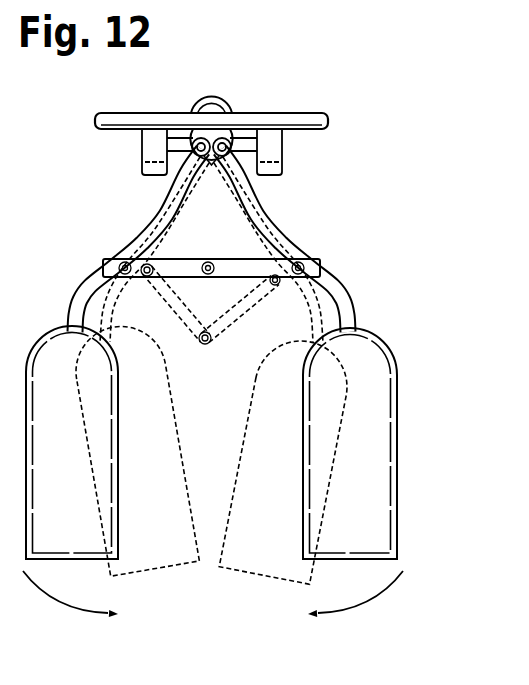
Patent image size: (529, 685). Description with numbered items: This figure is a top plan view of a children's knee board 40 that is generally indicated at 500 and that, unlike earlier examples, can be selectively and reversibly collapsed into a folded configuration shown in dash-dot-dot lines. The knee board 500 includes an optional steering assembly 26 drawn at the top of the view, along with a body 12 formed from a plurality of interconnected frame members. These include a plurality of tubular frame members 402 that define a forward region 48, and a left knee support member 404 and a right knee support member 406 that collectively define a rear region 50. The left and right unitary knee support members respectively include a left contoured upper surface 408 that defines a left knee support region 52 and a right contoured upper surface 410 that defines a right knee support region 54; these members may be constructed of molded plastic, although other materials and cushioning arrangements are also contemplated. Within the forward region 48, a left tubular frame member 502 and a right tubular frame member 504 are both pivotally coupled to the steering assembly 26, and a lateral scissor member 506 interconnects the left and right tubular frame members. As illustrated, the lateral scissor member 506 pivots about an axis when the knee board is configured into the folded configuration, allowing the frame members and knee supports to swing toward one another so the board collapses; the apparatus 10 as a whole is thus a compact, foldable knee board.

The gripping apparatus 10 is at (376, 60).
The body 12 is at (83, 222).
The steering assembly 26 is at (307, 138).
The knee board 40 is at (343, 67).
The forward region 48 is at (330, 239).
The rear region 50 is at (403, 379).
The left knee support region 52 is at (58, 548).
The right knee support region 54 is at (360, 548).
The tubular frame members 402 is at (259, 236).
The left knee support member 404 is at (120, 511).
The right knee support member 406 is at (303, 507).
The left contoured upper surface 408 is at (92, 520).
The right contoured upper surface 410 is at (375, 520).
The knee board 500 is at (325, 60).
The left tubular frame member 502 is at (134, 236).
The right tubular frame member 504 is at (290, 235).
The lateral scissor member 506 is at (222, 278).